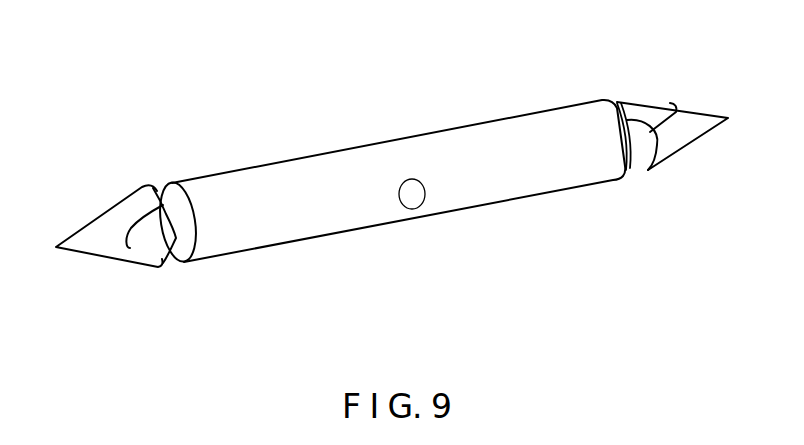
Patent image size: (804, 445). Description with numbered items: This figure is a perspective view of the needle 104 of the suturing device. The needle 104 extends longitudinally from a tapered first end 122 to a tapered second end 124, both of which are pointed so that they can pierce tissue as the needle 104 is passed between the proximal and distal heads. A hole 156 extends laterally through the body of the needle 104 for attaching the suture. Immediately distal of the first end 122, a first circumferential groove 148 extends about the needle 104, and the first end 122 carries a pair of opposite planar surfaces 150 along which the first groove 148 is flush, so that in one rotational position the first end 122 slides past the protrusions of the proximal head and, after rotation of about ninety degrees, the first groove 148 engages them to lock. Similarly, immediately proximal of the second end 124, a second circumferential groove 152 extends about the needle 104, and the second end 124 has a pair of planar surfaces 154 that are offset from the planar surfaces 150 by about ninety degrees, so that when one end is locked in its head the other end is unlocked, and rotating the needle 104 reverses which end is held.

The needle 104 is at (292, 142).
The first end 122 is at (673, 145).
The second end 124 is at (105, 235).
The first circumferential groove 148 is at (635, 147).
The planar surfaces 150 is at (640, 110).
The second circumferential groove 152 is at (183, 250).
The planar surfaces 154 is at (148, 252).
The hole 156 is at (413, 200).